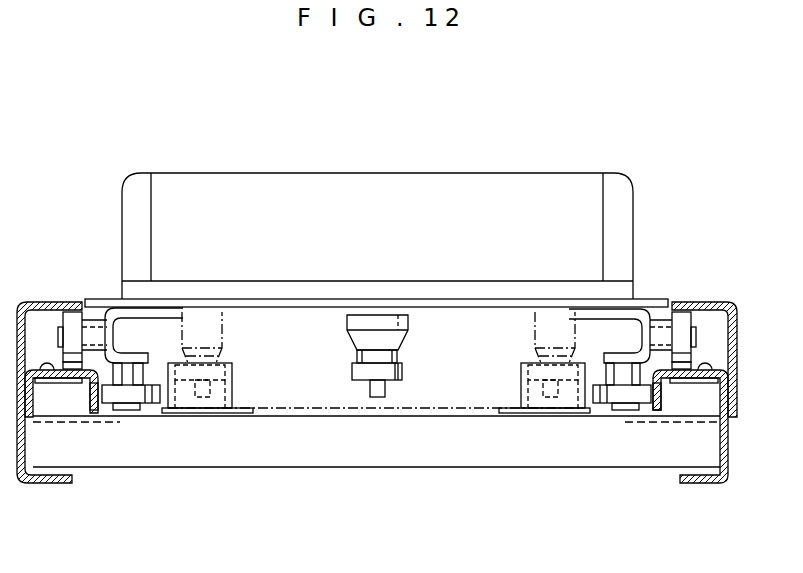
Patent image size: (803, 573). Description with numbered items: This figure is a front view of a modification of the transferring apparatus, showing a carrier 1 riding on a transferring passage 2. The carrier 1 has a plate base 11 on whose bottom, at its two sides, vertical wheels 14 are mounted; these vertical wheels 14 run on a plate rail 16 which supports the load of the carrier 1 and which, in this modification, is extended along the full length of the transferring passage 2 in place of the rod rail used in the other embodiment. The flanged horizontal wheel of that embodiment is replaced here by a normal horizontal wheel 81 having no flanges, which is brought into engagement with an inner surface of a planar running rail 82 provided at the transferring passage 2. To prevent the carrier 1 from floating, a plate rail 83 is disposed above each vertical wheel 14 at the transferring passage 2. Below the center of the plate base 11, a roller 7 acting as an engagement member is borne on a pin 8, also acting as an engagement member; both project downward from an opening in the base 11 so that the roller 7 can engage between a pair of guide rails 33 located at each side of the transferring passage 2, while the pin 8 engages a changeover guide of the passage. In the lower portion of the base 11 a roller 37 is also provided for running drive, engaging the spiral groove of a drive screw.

The carrier 1 is at (581, 154).
The transferring passage 2 is at (337, 494).
The roller 7 is at (402, 370).
The pin 8 is at (385, 390).
The plate base 11 is at (505, 305).
The vertical wheel 14 is at (62, 318).
The plate rail 16 is at (42, 380).
The guide rails 33 is at (175, 390).
The roller 37 is at (408, 325).
The horizontal wheel 81 is at (108, 407).
The planar running rail 82 is at (88, 403).
The plate rail 83 is at (73, 302).